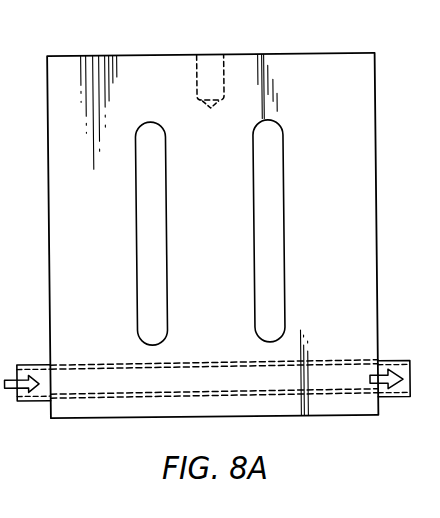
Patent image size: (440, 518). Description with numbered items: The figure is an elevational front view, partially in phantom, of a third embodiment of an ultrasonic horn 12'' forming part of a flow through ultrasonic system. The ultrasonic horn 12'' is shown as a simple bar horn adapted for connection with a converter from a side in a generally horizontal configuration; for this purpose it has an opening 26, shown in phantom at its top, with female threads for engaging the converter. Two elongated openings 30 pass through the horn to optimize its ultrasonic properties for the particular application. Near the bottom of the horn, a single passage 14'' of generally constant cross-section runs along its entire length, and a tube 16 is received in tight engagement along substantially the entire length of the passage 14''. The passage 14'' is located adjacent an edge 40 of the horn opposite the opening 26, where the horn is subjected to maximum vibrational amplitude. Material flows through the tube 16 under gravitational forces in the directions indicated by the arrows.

The ultrasonic horn 12'' is at (232, 235).
The passage 14'' is at (216, 355).
The tube 16 is at (396, 399).
The opening 26 is at (223, 71).
The openings 30 is at (166, 318).
The edge 40 is at (311, 417).